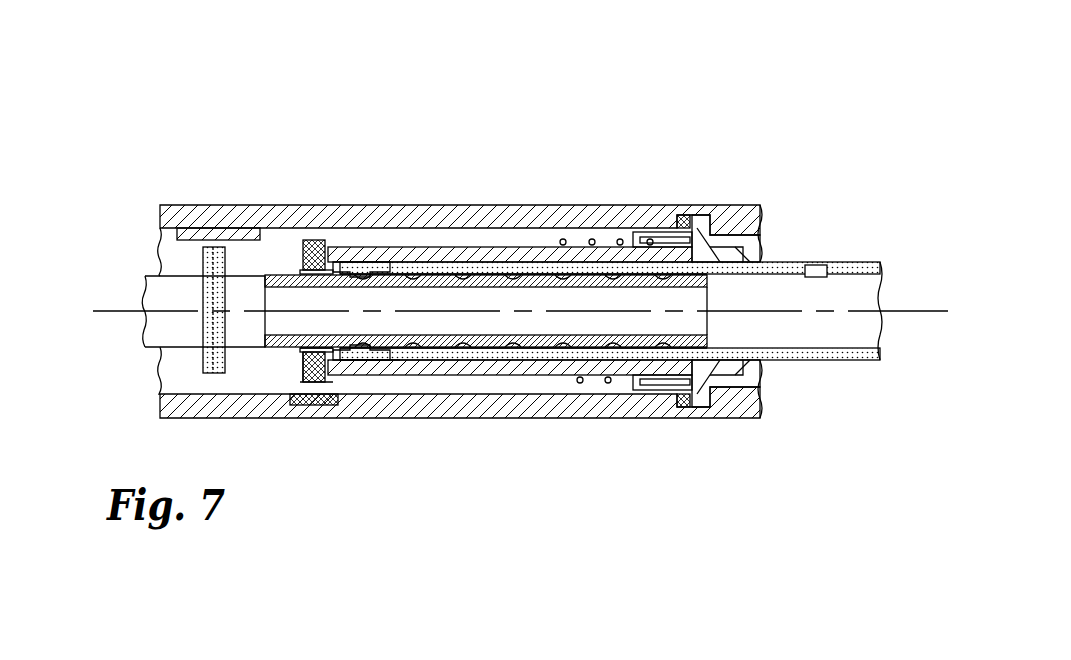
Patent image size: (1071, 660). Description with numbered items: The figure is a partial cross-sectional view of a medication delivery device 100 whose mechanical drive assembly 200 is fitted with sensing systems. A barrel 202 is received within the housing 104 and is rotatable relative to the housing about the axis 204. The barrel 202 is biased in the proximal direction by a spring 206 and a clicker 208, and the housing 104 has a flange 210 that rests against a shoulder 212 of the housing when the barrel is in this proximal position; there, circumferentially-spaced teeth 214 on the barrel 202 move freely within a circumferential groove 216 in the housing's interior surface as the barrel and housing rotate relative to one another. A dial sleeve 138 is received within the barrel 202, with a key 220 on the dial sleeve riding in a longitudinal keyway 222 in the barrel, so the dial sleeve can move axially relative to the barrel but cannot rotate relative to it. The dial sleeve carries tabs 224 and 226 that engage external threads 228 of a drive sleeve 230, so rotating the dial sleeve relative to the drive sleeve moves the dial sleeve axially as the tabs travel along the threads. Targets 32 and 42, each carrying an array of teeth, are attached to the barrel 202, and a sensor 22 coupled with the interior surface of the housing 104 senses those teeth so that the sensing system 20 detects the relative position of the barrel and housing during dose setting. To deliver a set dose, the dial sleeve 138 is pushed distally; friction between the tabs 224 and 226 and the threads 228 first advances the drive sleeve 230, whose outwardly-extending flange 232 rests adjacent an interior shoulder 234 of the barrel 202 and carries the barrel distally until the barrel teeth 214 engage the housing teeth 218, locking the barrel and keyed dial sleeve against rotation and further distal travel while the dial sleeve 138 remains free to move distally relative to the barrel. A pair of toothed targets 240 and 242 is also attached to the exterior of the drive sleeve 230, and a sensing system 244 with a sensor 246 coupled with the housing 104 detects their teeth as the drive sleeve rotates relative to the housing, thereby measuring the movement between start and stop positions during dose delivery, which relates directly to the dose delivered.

The medication delivery device 100 is at (702, 547).
The housing 104 is at (461, 212).
The dial sleeve 138 is at (827, 360).
The mechanical drive assembly 200 is at (543, 140).
The barrel 202 is at (387, 372).
The axis 204 is at (640, 371).
The spring 206 is at (607, 384).
The clicker 208 is at (685, 407).
The flange 210 is at (712, 390).
The shoulder 212 is at (713, 395).
The teeth 214 is at (697, 215).
The circumferential groove 216 is at (712, 216).
The housing teeth 218 is at (683, 218).
The key 220 is at (390, 352).
The longitudinal keyway 222 is at (520, 364).
The tab 224 is at (367, 350).
The tab 226 is at (362, 270).
The external threads 228 is at (393, 270).
The drive sleeve 230 is at (433, 325).
The outwardly-extending flange 232 is at (310, 242).
The interior shoulder 234 is at (348, 265).
The toothed target 240 is at (203, 365).
The toothed target 242 is at (227, 253).
The sensing system 244 is at (154, 257).
The sensor 246 is at (200, 228).
The sensing system 20 is at (300, 378).
The sensor 22 is at (300, 395).
The target 32 is at (300, 370).
The target 42 is at (318, 384).